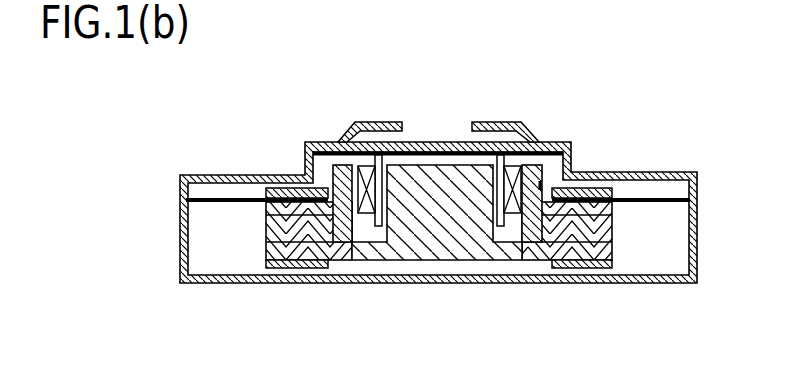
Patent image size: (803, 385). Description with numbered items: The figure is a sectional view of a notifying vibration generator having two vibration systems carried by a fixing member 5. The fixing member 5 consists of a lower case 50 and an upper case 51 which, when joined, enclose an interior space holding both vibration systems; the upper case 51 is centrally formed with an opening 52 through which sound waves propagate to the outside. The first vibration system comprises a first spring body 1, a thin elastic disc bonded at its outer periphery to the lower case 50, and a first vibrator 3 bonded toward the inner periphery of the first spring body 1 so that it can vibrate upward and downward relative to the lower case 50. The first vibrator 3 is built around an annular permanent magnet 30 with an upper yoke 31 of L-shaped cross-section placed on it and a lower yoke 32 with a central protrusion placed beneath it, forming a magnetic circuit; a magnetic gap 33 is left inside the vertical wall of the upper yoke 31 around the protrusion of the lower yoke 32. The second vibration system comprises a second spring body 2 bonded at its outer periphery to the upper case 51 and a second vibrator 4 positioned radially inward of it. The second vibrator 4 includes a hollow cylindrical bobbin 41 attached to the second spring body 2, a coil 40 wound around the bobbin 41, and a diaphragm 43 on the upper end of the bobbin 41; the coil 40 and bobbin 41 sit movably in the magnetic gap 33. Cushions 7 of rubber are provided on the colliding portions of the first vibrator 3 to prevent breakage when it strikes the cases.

The first spring body 1 is at (650, 200).
The second spring body 2 is at (350, 128).
The first vibrator 3 is at (411, 270).
The second vibrator 4 is at (542, 50).
The fixing member 5 is at (107, 227).
The cushion 7 is at (283, 192).
The permanent magnet 30 is at (607, 227).
The upper yoke 31 is at (540, 188).
The lower yoke 32 is at (455, 243).
The magnetic gap 33 is at (515, 232).
The coil 40 is at (523, 137).
The bobbin 41 is at (500, 165).
The diaphragm 43 is at (437, 143).
The lower case 50 is at (197, 285).
The upper case 51 is at (182, 176).
The opening 52 is at (407, 125).